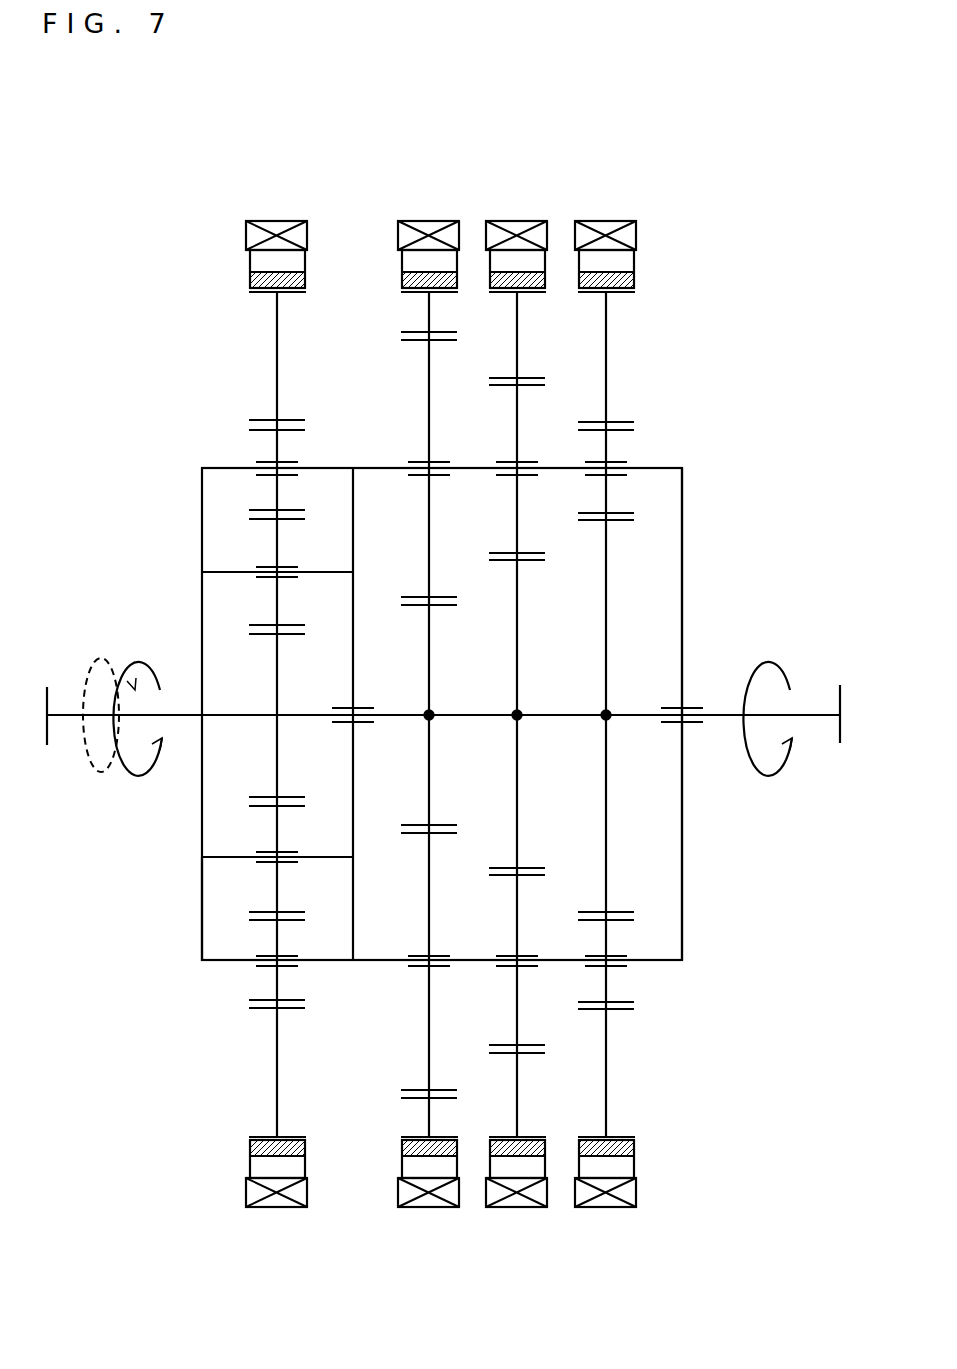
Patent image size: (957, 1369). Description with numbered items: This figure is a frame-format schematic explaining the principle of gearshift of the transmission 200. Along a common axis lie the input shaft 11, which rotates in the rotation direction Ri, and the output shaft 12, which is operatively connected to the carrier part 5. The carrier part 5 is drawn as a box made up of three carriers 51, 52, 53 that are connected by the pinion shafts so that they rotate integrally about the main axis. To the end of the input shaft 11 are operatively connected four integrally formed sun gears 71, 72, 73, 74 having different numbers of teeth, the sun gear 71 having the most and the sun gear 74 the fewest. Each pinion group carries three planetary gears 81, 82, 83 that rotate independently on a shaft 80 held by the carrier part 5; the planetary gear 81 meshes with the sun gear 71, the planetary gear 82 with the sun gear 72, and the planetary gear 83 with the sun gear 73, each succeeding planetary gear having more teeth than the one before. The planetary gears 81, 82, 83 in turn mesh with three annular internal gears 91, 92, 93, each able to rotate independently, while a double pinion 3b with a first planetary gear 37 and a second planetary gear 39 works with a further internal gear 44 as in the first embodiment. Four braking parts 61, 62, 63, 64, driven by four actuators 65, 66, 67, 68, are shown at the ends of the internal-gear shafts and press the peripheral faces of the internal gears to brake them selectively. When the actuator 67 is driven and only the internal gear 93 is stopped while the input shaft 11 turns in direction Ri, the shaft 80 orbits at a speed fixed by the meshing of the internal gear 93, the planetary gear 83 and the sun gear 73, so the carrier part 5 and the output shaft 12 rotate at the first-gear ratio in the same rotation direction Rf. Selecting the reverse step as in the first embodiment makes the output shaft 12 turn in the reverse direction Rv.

The transmission 200 is at (160, 130).
The carrier part 5 is at (722, 498).
The carrier 51 is at (682, 585).
The carrier 52 is at (355, 503).
The carrier 53 is at (200, 900).
The input shaft 11 is at (823, 718).
The output shaft 12 is at (62, 718).
The first planetary gear 37 is at (265, 541).
The second planetary gear 39 is at (248, 443).
The internal gear 44 is at (248, 357).
The double pinion 3b is at (233, 977).
The braking part 61 is at (633, 262).
The braking part 62 is at (490, 262).
The braking part 63 is at (400, 262).
The braking part 64 is at (247, 262).
The actuator 65 is at (606, 1210).
The actuator 66 is at (517, 1210).
The actuator 67 is at (429, 1210).
The actuator 68 is at (277, 1210).
The sun gear 71 is at (635, 835).
The sun gear 72 is at (538, 777).
The sun gear 73 is at (457, 751).
The sun gear 74 is at (268, 722).
The shaft 80 is at (655, 445).
The planetary gear 81 is at (632, 980).
The planetary gear 82 is at (530, 1008).
The planetary gear 83 is at (413, 1015).
The internal gear 91 is at (625, 338).
The internal gear 92 is at (538, 328).
The internal gear 93 is at (405, 306).
The reverse direction Rv is at (113, 660).
The rotation direction Rf is at (138, 772).
The rotation direction Ri is at (767, 658).